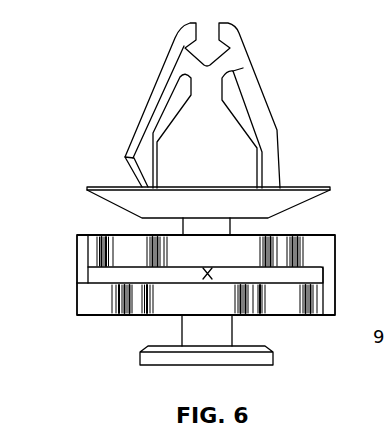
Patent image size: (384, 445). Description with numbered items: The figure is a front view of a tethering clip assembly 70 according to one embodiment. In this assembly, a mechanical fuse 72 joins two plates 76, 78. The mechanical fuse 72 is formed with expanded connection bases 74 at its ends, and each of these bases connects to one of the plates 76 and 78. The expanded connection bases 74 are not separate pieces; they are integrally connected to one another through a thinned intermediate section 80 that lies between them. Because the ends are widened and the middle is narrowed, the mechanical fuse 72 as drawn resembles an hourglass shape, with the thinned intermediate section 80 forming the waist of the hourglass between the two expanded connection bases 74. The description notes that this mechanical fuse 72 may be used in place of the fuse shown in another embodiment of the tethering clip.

The tethering clip assembly 70 is at (97, 50).
The mechanical fuse 72 is at (208, 274).
The expanded connection bases 74 is at (207, 272).
The plate 76 is at (162, 293).
The plate 78 is at (175, 235).
The thinned intermediate section 80 is at (206, 273).